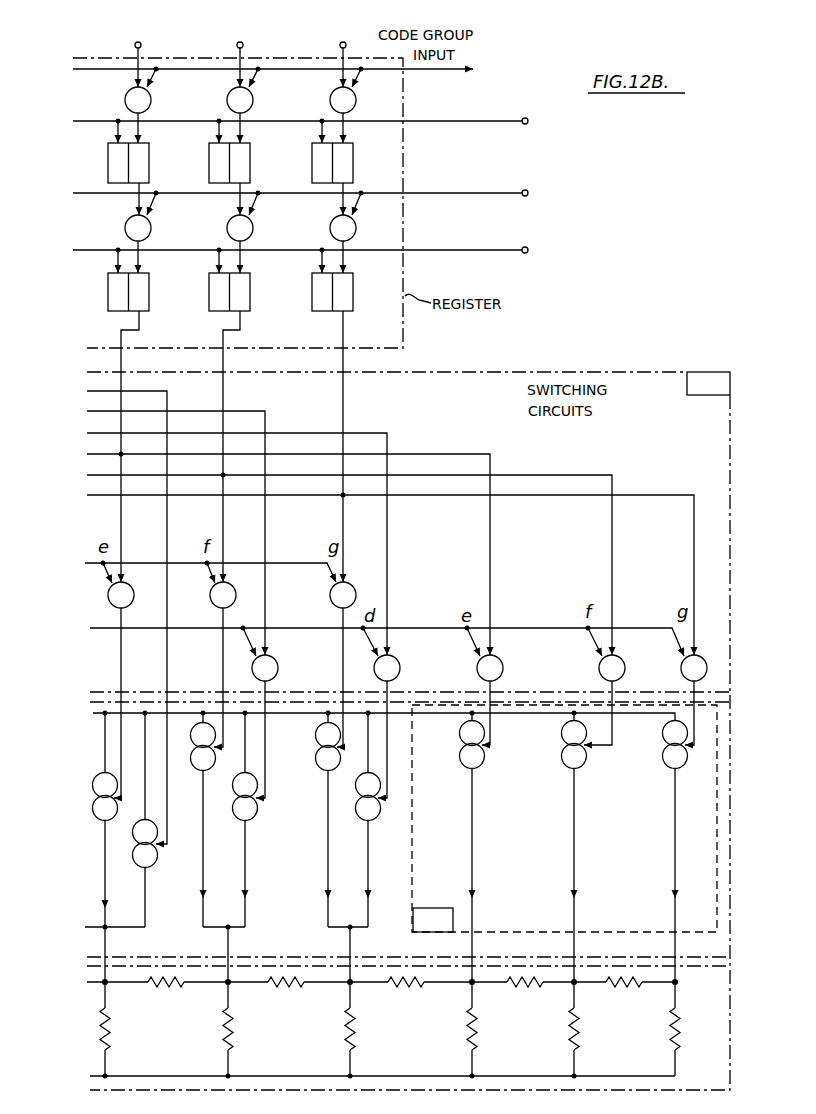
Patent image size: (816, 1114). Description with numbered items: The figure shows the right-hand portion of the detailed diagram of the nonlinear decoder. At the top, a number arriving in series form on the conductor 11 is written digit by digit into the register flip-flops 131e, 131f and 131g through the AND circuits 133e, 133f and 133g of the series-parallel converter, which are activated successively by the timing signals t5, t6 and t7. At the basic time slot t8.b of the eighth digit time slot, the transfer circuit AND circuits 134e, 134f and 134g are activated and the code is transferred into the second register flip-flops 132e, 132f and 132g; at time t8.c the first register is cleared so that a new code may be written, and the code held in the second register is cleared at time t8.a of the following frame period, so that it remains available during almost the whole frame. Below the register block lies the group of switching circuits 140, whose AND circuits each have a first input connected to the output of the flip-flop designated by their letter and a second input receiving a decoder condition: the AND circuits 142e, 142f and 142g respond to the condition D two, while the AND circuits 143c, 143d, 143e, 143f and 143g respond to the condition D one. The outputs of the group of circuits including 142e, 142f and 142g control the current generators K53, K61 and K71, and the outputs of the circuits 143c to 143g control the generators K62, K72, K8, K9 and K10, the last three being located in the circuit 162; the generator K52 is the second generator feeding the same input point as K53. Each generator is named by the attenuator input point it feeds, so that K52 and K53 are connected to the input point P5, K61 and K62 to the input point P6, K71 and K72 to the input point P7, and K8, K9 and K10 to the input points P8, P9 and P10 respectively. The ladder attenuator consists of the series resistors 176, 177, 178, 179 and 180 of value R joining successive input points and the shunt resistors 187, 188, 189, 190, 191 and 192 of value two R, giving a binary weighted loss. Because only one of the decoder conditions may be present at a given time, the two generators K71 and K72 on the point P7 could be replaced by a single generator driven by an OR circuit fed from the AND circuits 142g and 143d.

The conductor 11 is at (292, 70).
The signal t5 is at (126, 61).
The signal t6 is at (228, 61).
The signal t7 is at (331, 61).
The time t8a t8.a is at (547, 250).
The time t8b t8.b is at (547, 193).
The time t8c t8.c is at (546, 121).
The AND circuit 133e is at (114, 106).
The AND circuit 133f is at (216, 106).
The AND circuit 133g is at (319, 106).
The flip-flop 131e is at (108, 152).
The flip-flop 131f is at (210, 152).
The flip-flop 131g is at (312, 152).
The AND circuit 134e is at (115, 228).
The AND circuit 134f is at (218, 228).
The AND circuit 134g is at (319, 228).
The flip-flop 132e is at (107, 280).
The flip-flop 132f is at (204, 280).
The flip-flop 132g is at (306, 280).
The group of switching circuits 140 is at (708, 383).
The AND circuit 142e is at (98, 604).
The AND circuit 142f is at (204, 604).
The AND circuit 142g is at (323, 604).
The AND circuit 143c is at (290, 668).
The AND circuit 143d is at (414, 668).
The AND circuit 143e is at (514, 668).
The AND circuit 143f is at (593, 673).
The AND circuit 143g is at (669, 668).
The current generator K53 is at (89, 820).
The current generator K52 is at (164, 820).
The current generator K61 is at (195, 820).
The current generator K62 is at (261, 820).
The current generator K71 is at (306, 820).
The current generator K72 is at (355, 820).
The current generator K8 is at (461, 847).
The current generator K9 is at (558, 847).
The current generator K10 is at (657, 852).
The circuit 162 is at (564, 818).
The resistor 176 is at (166, 993).
The resistor 177 is at (286, 993).
The resistor 178 is at (406, 993).
The resistor 179 is at (525, 993).
The resistor 180 is at (625, 993).
The resistor 187 is at (124, 1030).
The resistor 188 is at (206, 1036).
The resistor 189 is at (329, 1034).
The resistor 190 is at (450, 1034).
The resistor 191 is at (555, 1034).
The resistor 192 is at (653, 1034).
The input point P5 is at (104, 984).
The input point P6 is at (227, 984).
The input point P7 is at (349, 984).
The input point P8 is at (471, 984).
The input point P9 is at (573, 984).
The input point P10 is at (694, 994).